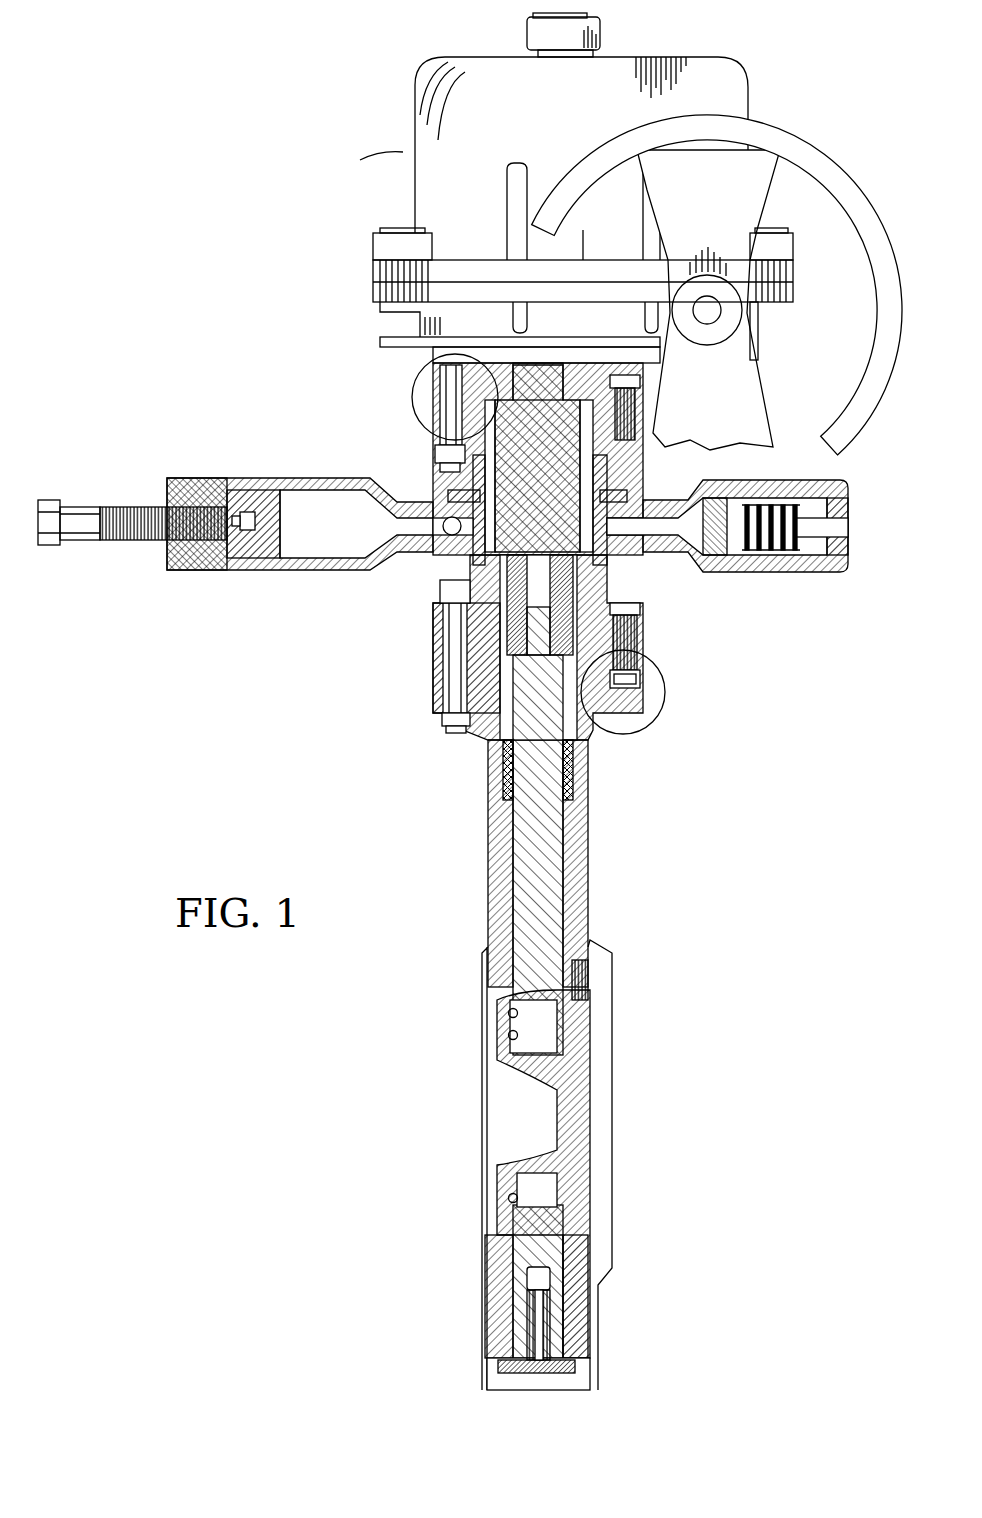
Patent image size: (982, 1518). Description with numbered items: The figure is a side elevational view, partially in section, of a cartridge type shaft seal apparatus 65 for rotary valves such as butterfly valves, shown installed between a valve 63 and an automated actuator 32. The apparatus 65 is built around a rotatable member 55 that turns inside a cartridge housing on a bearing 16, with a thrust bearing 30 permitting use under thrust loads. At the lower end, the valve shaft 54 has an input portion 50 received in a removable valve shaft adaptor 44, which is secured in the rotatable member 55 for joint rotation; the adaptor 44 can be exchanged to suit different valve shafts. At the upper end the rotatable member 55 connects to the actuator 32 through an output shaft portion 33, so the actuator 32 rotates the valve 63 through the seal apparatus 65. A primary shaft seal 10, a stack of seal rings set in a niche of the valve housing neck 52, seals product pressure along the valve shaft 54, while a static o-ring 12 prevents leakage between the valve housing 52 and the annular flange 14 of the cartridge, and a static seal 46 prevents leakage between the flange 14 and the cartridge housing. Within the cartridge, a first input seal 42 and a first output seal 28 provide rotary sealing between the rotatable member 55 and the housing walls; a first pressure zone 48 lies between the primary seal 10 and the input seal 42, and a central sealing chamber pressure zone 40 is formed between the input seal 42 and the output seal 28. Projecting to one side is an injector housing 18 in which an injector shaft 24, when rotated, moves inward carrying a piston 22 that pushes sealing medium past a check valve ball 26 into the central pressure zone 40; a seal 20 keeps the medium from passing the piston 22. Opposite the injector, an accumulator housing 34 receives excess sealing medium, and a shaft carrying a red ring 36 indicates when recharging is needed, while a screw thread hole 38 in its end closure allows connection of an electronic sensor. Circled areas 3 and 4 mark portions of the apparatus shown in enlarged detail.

The detail circle 3 is at (660, 710).
The detail circle 4 is at (412, 392).
The primary shaft seal 10 is at (503, 780).
The o-ring 12 is at (490, 745).
The annular flange 14 is at (450, 657).
The bearing 16 is at (455, 622).
The injector housing 18 is at (330, 572).
The seal 20 is at (265, 572).
The piston 22 is at (243, 572).
The injector shaft 24 is at (167, 482).
The check valve ball 26 is at (432, 492).
The first output seal 28 is at (437, 438).
The thrust bearing 30 is at (425, 336).
The actuator 32 is at (440, 162).
The output shaft portion 33 is at (523, 390).
The accumulator housing 34 is at (820, 480).
The ring 36 is at (827, 528).
The screw thread hole 38 is at (848, 560).
The central sealing chamber pressure zone 40 is at (677, 550).
The first input seal 42 is at (607, 585).
The valve shaft adaptor 44 is at (620, 608).
The static seal 46 is at (632, 632).
The first pressure zone 48 is at (637, 672).
The input portion 50 is at (578, 727).
The valve housing 52 is at (577, 813).
The valve shaft 54 is at (540, 870).
The rotatable member 55 is at (555, 490).
The valve 63 is at (593, 1075).
The shaft seal apparatus 65 is at (232, 440).